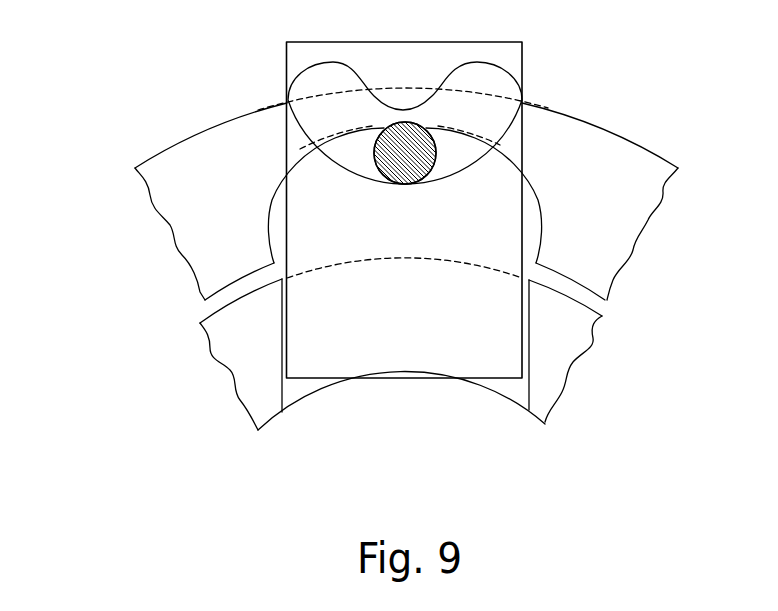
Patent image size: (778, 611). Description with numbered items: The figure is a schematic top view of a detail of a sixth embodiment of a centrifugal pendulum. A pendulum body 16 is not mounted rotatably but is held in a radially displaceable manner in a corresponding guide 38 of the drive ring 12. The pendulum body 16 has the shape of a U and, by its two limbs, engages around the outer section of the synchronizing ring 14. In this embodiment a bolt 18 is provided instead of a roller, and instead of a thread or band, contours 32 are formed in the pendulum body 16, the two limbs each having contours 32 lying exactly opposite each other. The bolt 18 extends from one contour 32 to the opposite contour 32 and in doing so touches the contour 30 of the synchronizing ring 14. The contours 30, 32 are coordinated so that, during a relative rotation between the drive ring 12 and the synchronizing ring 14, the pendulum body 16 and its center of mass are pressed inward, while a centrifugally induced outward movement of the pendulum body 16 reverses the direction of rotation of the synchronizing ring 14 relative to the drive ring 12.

The drive ring 12 is at (560, 357).
The synchronizing ring 14 is at (628, 216).
The pendulum body 16 is at (407, 343).
The bolt 18 is at (402, 149).
The contour of the synchronizing ring 30 is at (275, 205).
The contour of the pendulum body 32 is at (288, 100).
The guide 38 is at (315, 388).